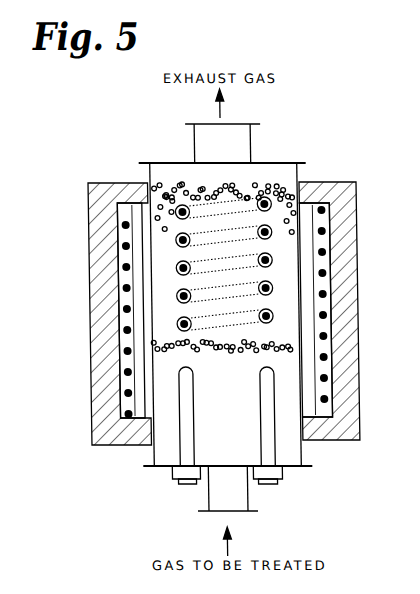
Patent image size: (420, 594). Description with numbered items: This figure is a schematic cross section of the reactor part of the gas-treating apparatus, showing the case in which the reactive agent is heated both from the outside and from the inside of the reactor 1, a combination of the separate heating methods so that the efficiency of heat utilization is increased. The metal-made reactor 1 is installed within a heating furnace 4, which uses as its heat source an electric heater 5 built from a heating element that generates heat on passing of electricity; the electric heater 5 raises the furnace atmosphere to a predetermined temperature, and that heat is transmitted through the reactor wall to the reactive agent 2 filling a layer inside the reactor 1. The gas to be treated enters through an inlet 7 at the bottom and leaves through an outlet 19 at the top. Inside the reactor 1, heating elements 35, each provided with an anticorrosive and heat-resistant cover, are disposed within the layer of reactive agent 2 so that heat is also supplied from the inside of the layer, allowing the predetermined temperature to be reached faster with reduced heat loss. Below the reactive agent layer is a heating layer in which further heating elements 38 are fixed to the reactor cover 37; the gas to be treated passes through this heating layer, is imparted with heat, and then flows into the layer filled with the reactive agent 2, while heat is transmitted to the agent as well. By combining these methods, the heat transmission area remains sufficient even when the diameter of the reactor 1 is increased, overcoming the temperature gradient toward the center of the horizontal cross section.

The reactor 1 is at (270, 162).
The reactive agent 2 is at (183, 188).
The heating furnace 4 is at (95, 298).
The electric heater 5 is at (125, 329).
The inlet 7 is at (230, 513).
The outlet 19 is at (243, 119).
The heating elements 35 is at (269, 263).
The reactor cover 37 is at (286, 468).
The heating elements 38 is at (186, 398).